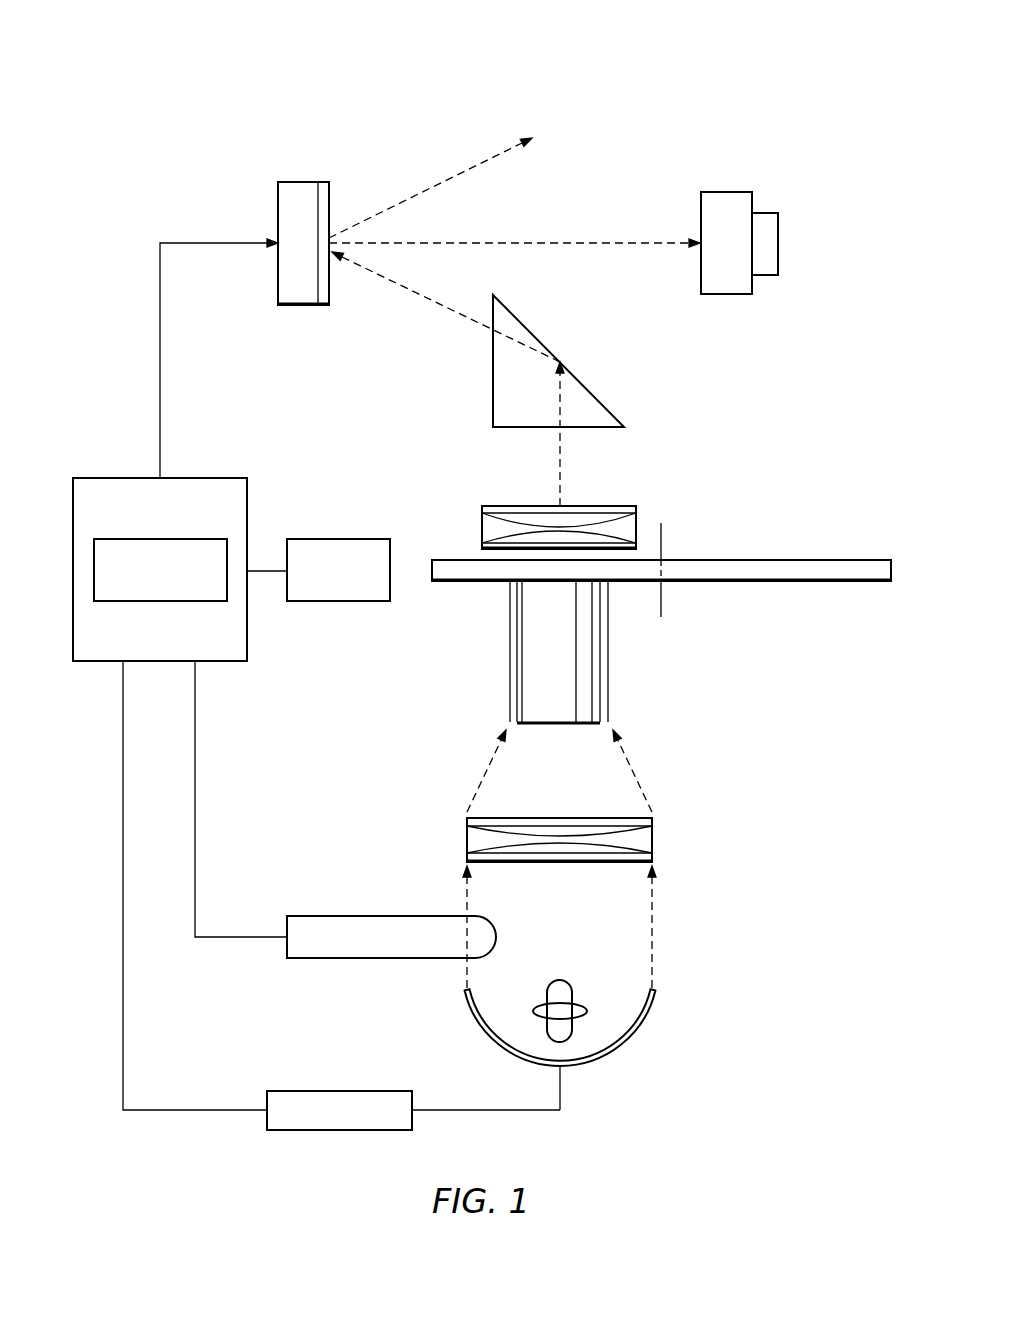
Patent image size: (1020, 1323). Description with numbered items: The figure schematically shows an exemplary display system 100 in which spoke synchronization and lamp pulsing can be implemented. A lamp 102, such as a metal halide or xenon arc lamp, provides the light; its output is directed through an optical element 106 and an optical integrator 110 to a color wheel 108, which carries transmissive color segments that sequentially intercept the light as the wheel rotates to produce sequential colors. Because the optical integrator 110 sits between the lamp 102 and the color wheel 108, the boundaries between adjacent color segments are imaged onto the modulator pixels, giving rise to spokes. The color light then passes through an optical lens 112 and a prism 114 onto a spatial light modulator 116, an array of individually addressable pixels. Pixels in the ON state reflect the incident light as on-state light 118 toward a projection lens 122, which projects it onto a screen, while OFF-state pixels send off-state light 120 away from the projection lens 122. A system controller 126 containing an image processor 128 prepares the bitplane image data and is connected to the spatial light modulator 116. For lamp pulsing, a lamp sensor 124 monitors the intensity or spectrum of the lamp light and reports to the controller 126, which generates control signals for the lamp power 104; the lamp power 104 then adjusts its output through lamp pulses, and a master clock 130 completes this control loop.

The display system 100 is at (366, 78).
The lamp 102 is at (637, 1030).
The lamp power 104 is at (340, 1132).
The optical element 106 is at (652, 840).
The color wheel 108 is at (768, 559).
The optical integrator 110 is at (517, 650).
The optical lens 112 is at (605, 505).
The prism 114 is at (590, 392).
The spatial light modulator 116 is at (297, 182).
The on-state light 118 is at (582, 241).
The off-state light 120 is at (466, 170).
The projection lens 122 is at (727, 192).
The lamp sensor 124 is at (390, 960).
The system controller 126 is at (122, 472).
The image processor 128 is at (160, 602).
The master clock 130 is at (340, 602).